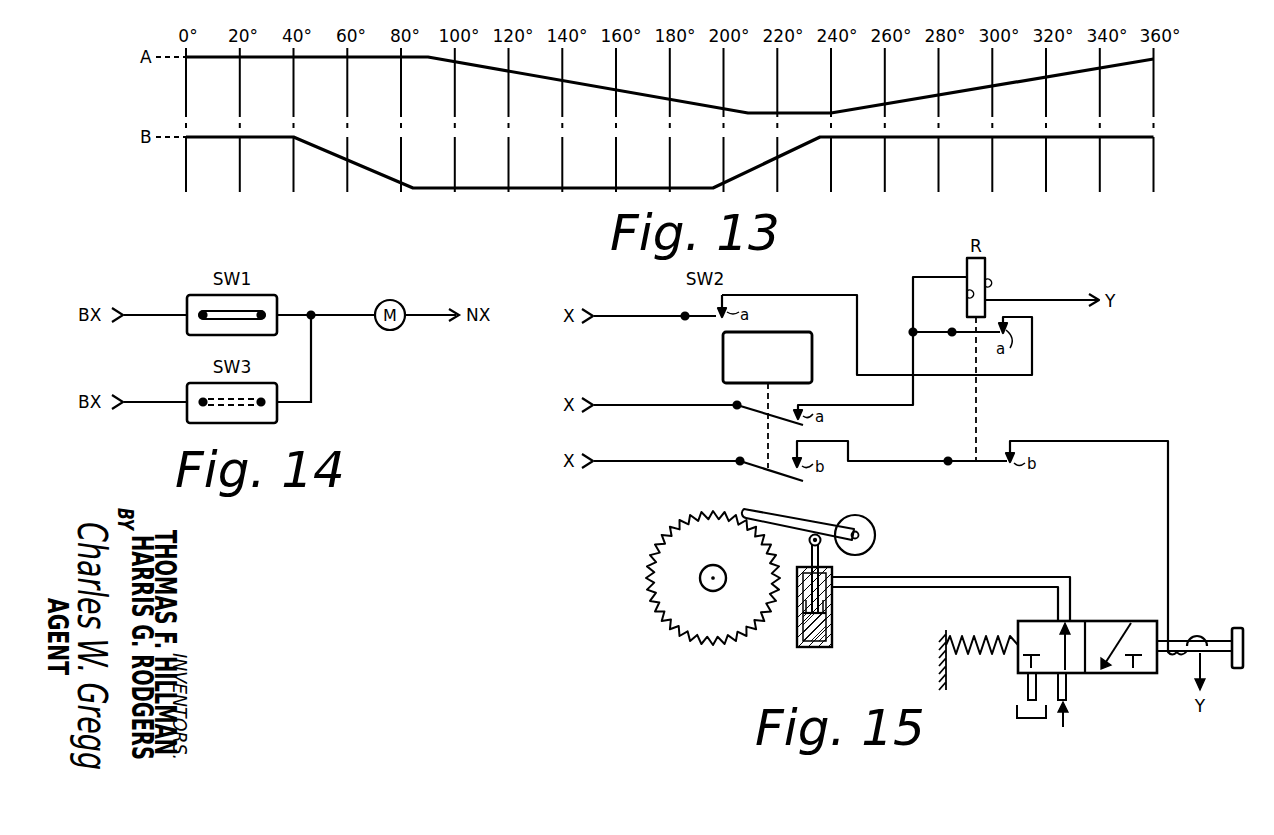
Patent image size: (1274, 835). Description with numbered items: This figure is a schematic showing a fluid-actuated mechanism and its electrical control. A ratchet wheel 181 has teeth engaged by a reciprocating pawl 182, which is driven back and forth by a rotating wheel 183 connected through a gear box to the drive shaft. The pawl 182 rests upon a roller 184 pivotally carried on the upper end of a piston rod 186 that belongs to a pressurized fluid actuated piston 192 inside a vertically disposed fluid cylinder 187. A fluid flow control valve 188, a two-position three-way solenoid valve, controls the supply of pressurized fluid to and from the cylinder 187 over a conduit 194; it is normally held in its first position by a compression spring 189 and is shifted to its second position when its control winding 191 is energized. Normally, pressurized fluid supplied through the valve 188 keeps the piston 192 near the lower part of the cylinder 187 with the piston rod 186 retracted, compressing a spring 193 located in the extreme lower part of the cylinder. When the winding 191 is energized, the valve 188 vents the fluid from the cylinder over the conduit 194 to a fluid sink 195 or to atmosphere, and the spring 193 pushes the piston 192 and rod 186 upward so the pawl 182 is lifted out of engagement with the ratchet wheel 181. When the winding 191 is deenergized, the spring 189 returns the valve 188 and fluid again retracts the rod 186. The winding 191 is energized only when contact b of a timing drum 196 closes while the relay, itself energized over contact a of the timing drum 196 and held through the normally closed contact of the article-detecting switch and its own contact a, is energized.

The ratchet wheel 181 is at (727, 623).
The pawl 182 is at (797, 514).
The rotating wheel 183 is at (876, 532).
The roller 184 is at (809, 541).
The piston rod 186 is at (822, 560).
The fluid cylinder 187 is at (832, 628).
The fluid flow control valve 188 is at (1115, 621).
The compression spring 189 is at (974, 656).
The control winding 191 is at (1196, 637).
The piston 192 is at (830, 607).
The spring 193 is at (813, 645).
The conduit 194 is at (966, 577).
The fluid sink 195 is at (1014, 712).
The timing drum 196 is at (723, 360).